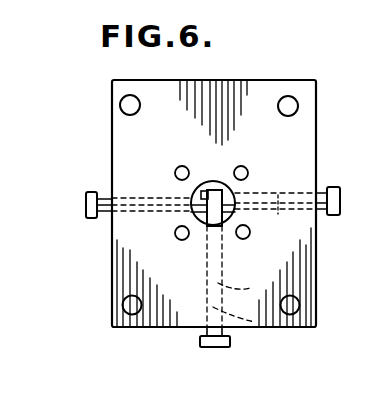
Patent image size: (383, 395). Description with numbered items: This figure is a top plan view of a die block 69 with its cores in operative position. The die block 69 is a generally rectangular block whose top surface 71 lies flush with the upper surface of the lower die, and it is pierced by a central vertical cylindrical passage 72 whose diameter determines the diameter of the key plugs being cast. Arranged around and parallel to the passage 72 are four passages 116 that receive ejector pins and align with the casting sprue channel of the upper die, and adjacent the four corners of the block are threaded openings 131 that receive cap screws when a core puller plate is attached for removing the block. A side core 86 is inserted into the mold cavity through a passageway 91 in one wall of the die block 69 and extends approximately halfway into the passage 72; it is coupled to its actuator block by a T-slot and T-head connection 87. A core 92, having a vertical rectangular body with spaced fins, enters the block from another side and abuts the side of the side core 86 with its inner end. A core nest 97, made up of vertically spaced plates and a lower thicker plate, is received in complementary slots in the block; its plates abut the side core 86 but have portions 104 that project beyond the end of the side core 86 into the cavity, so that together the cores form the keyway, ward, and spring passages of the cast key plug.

The die block 69 is at (125, 250).
The threaded openings 131 is at (124, 97).
The passages 116 is at (176, 171).
The top surface 71 is at (160, 143).
The central vertical cylindrical passage 72 is at (215, 185).
The portions 104 is at (211, 182).
The core 92 is at (145, 198).
The core nest 97 is at (278, 214).
The side core 86 is at (241, 277).
The T-slot and T-head connection 87 is at (200, 339).
The passageway 91 is at (255, 322).